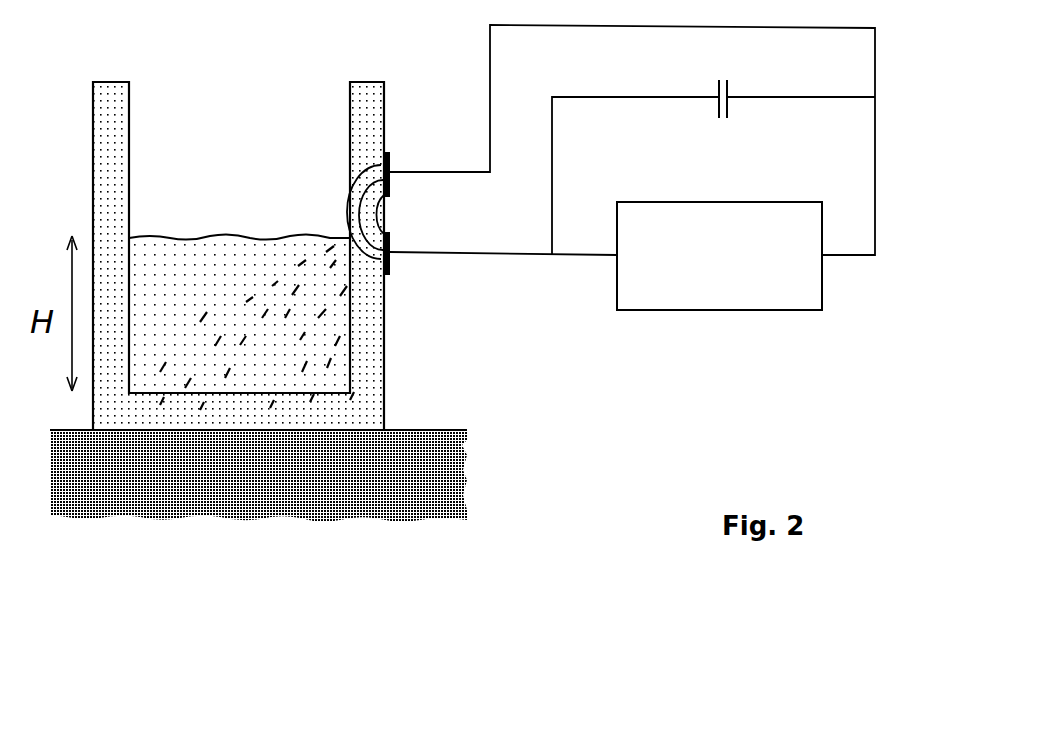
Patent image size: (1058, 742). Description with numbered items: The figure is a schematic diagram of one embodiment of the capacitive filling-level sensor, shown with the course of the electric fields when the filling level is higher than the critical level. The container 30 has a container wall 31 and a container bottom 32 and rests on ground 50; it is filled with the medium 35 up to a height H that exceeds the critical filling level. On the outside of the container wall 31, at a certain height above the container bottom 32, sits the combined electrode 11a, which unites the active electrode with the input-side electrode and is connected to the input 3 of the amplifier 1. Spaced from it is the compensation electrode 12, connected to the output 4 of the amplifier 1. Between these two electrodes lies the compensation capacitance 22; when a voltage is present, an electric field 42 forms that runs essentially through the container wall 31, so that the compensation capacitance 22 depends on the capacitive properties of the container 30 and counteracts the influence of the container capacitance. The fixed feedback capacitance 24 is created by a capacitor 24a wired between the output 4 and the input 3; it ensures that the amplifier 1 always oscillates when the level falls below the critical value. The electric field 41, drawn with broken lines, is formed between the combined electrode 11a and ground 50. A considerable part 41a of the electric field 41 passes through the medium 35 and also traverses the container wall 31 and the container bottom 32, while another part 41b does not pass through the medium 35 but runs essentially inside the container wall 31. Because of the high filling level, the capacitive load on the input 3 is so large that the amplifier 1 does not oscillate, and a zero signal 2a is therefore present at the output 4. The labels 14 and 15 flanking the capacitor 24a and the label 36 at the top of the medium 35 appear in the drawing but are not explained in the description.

The amplifier 1 is at (733, 270).
The zero signal 2a is at (898, 272).
The input 3 is at (626, 254).
The output 4 is at (810, 254).
The combined electrode 11a is at (392, 267).
The compensation electrode 12 is at (393, 158).
The capacitor connection 14 is at (733, 110).
The capacitor connection 15 is at (710, 110).
The compensation capacitance 22 is at (398, 192).
The fixed feedback capacitance 24 is at (723, 73).
The capacitor 24a is at (723, 99).
The container 30 is at (248, 119).
The container wall 31 is at (100, 88).
The container bottom 32 is at (248, 423).
The medium 35 is at (182, 275).
The liquid surface 36 is at (160, 237).
The electric field 41 is at (292, 353).
The part of the electric field 41a is at (367, 345).
The another part of the electric field 41b is at (298, 373).
The electric field 42 is at (357, 212).
The ground 50 is at (440, 472).